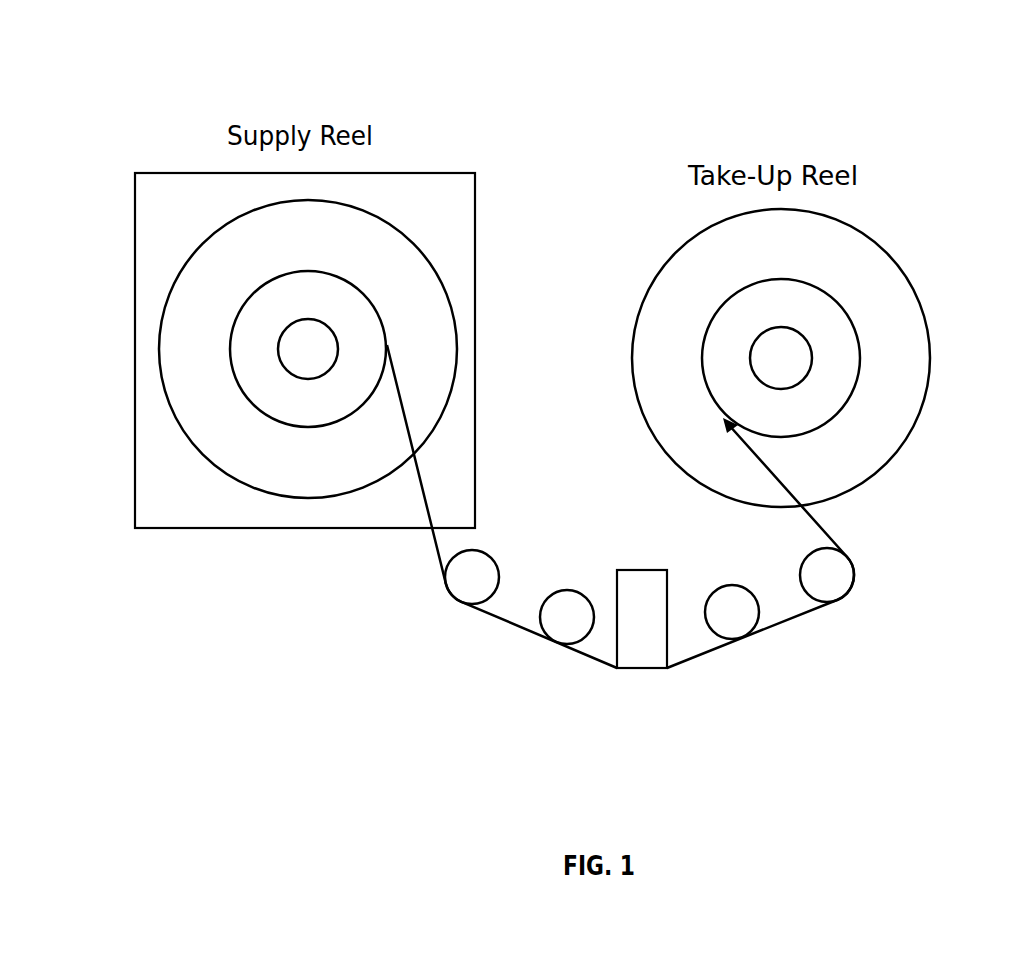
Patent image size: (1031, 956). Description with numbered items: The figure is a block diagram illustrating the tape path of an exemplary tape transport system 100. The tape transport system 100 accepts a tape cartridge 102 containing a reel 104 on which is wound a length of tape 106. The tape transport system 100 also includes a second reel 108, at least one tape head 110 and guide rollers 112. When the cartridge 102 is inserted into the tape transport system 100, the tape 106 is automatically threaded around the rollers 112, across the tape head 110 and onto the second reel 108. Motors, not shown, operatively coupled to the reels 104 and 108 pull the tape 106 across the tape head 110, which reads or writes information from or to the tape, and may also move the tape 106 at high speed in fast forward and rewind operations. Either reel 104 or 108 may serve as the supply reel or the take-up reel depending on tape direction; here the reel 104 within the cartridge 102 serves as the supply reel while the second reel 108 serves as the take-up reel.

The tape transport system 100 is at (970, 106).
The tape cartridge 102 is at (135, 210).
The reel 104 is at (167, 283).
The tape 106 is at (420, 476).
The second reel 108 is at (922, 416).
The tape head 110 is at (642, 570).
The guide rollers 112 is at (570, 590).